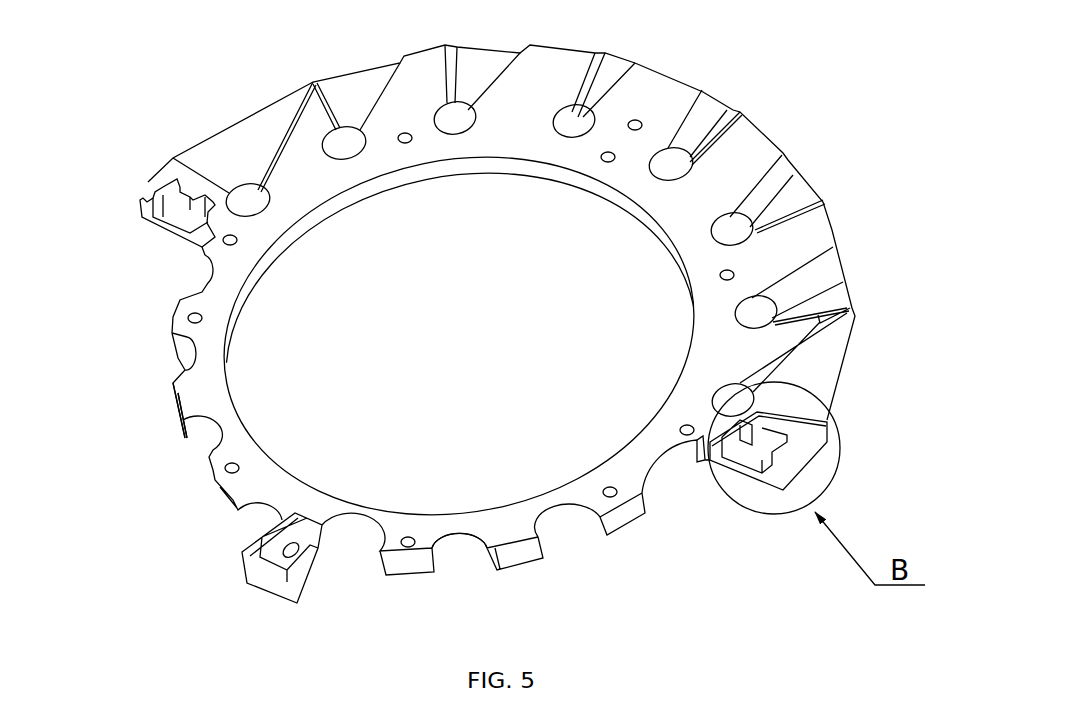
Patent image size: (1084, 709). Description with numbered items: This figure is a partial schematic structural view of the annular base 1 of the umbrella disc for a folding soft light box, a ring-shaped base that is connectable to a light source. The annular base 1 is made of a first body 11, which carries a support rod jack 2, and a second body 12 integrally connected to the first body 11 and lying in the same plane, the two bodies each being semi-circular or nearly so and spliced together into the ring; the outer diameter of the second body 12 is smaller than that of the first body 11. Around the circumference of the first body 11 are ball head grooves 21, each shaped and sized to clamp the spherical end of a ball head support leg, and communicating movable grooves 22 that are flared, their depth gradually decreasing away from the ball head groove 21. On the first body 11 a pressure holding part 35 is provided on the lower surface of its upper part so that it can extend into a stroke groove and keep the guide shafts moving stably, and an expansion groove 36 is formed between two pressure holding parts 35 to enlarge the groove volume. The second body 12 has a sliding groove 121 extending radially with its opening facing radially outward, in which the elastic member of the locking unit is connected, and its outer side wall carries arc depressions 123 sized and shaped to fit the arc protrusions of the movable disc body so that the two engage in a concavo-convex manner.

The annular base 1 is at (730, 157).
The support rod jack 2 is at (827, 250).
The first body 11 is at (812, 372).
The second body 12 is at (202, 398).
The ball head groove 21 is at (350, 143).
The movable groove 22 is at (362, 88).
The pressure holding part 35 is at (147, 186).
The expansion groove 36 is at (180, 209).
The sliding groove 121 is at (267, 577).
The arc depression 123 is at (462, 545).